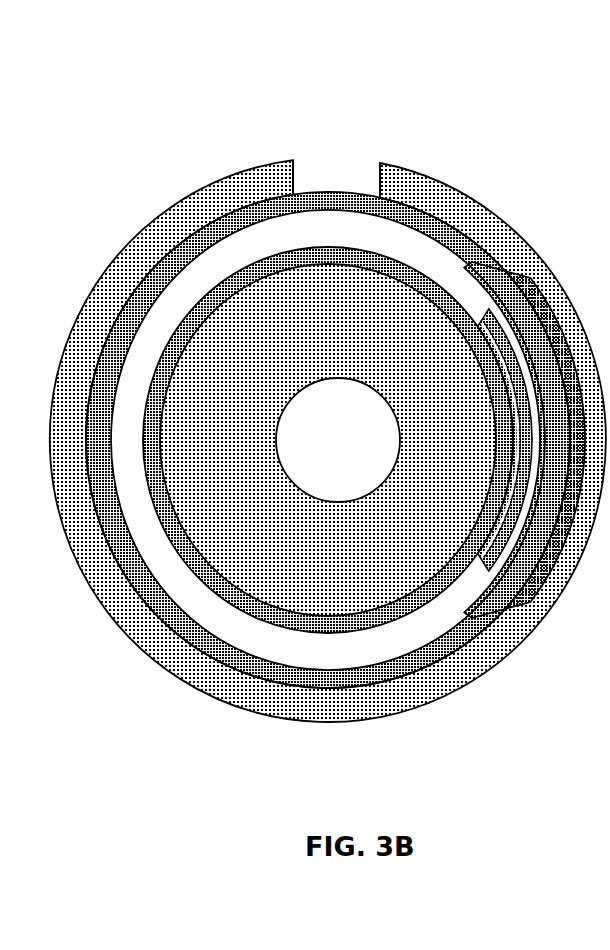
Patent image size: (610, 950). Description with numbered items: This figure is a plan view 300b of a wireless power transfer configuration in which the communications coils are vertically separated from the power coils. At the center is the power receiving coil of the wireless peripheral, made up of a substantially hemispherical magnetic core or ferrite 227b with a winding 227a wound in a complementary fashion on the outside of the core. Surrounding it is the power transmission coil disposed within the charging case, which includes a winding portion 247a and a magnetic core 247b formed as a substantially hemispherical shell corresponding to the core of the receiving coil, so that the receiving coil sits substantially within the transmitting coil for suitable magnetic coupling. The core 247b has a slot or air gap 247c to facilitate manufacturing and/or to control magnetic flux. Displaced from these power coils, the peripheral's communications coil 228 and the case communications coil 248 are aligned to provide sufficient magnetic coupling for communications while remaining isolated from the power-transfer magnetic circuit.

The plan view 300b is at (470, 116).
The slot or air gap 247c is at (330, 162).
The magnetic core 247b is at (243, 708).
The winding portion 247a is at (185, 648).
The case communications coil 248 is at (495, 592).
The winding 227a is at (356, 266).
The magnetic core 227b is at (386, 486).
The communications coil 228 is at (484, 372).